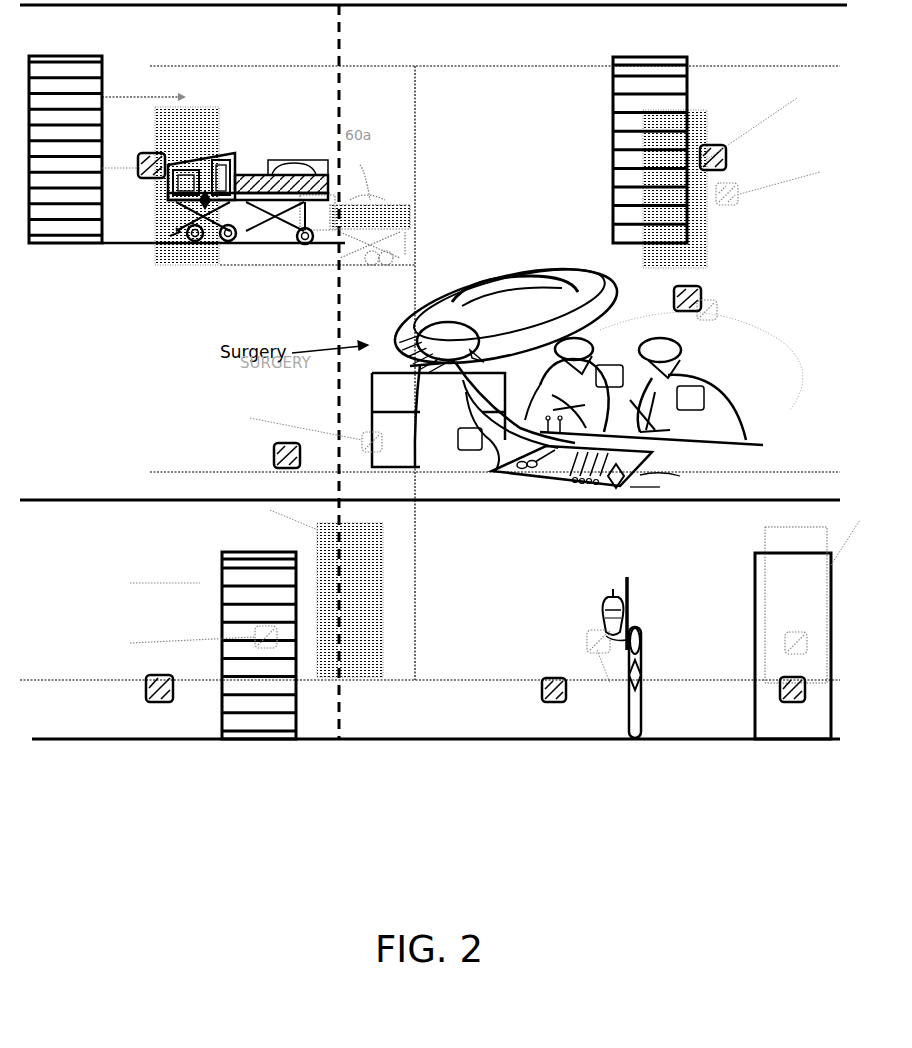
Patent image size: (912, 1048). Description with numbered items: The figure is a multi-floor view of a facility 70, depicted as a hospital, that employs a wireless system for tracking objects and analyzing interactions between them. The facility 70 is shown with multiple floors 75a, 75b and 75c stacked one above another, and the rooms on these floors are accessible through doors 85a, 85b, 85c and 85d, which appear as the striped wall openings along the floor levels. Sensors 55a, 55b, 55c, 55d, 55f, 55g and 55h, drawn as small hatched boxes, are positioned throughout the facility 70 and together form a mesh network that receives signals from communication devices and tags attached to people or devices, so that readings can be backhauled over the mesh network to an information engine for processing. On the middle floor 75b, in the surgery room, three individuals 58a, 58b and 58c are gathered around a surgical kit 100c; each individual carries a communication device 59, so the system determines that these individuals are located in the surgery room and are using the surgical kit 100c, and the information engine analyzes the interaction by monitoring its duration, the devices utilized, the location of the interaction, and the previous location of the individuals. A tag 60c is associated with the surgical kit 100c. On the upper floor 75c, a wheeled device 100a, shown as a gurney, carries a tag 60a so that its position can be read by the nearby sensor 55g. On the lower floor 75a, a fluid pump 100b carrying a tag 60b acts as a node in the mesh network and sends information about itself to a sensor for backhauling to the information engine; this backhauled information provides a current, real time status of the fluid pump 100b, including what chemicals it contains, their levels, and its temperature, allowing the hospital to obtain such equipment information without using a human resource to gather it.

The facility 70 is at (292, 768).
The floor 75a is at (100, 578).
The floor 75b is at (752, 316).
The floor 75c is at (116, 50).
The door 85a is at (221, 565).
The door 85b is at (754, 570).
The door 85c is at (102, 73).
The door 85d is at (688, 132).
The sensor 55a is at (144, 684).
The sensor 55b is at (567, 688).
The sensor 55c is at (778, 690).
The sensor 55d is at (272, 456).
The sensor 55f is at (673, 300).
The sensor 55g is at (148, 152).
The sensor 55h is at (727, 158).
The device 100a is at (248, 175).
The fluid pump 100b is at (630, 597).
The surgical kit 100c is at (648, 455).
The tag 60a is at (186, 222).
The tag 60b is at (642, 676).
The tag 60c is at (625, 485).
The individual 58a is at (567, 385).
The individual 58b is at (688, 389).
The individual 58c is at (492, 397).
The communication device 59 is at (690, 386).